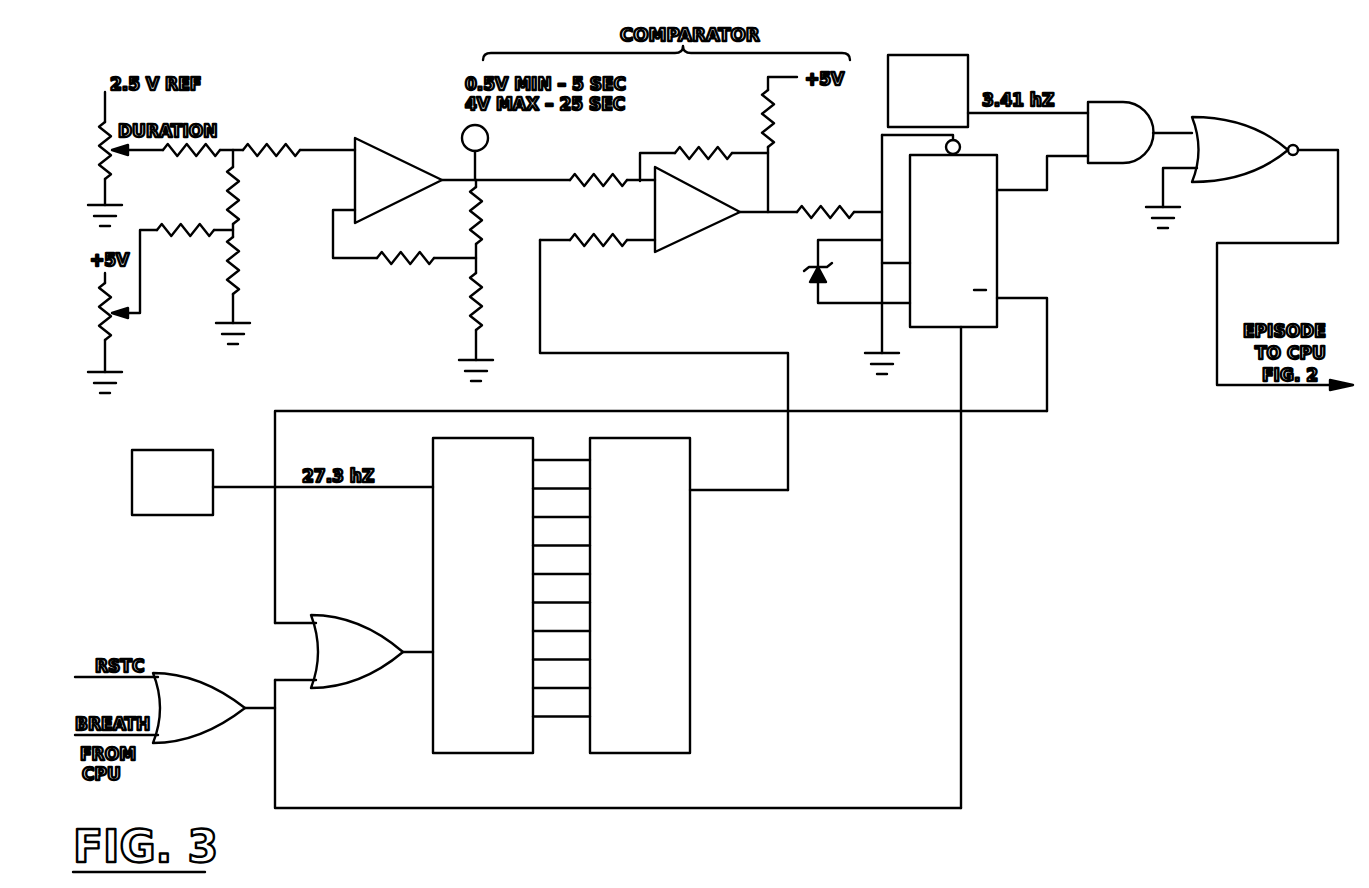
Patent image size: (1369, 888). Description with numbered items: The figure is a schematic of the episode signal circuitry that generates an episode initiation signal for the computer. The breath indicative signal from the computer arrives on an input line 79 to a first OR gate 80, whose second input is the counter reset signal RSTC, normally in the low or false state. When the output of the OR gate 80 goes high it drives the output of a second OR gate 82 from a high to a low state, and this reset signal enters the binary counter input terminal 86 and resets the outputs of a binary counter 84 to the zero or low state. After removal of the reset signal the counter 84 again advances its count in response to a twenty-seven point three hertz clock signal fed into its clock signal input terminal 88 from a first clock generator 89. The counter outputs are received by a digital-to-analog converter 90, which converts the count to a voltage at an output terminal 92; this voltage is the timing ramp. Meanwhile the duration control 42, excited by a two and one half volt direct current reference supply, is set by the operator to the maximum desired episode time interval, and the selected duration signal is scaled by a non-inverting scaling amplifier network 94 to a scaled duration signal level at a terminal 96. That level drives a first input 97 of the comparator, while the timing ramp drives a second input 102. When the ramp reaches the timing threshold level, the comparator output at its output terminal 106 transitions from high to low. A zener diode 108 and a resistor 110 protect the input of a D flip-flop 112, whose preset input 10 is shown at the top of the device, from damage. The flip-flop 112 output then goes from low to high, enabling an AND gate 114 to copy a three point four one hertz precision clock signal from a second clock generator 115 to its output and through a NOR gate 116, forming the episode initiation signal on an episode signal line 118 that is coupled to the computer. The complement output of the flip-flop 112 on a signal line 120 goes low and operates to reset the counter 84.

The duration control 42 is at (113, 160).
The scaling amplifier network 94 is at (463, 118).
The terminal 96 is at (488, 141).
The first input 97 is at (484, 183).
The second input 102 is at (540, 272).
The output terminal 106 is at (777, 213).
The zener diode 108 is at (812, 284).
The resistor 110 is at (837, 204).
The preset input 10 is at (935, 143).
The D flip-flop 112 is at (993, 263).
The AND gate 114 is at (1114, 163).
The second clock generator 115 is at (928, 91).
The NOR gate 116 is at (1248, 120).
The episode signal line 118 is at (1247, 243).
The signal line 120 is at (1047, 375).
The first clock generator 89 is at (172, 482).
The clock signal input terminal 88 is at (428, 497).
The binary counter input terminal 86 is at (430, 647).
The second OR gate 82 is at (347, 690).
The first OR gate 80 is at (178, 747).
The breath from CPU input line 79 is at (132, 737).
The binary counter 84 is at (495, 740).
The digital-to-analog converter 90 is at (652, 740).
The output terminal 92 is at (695, 487).